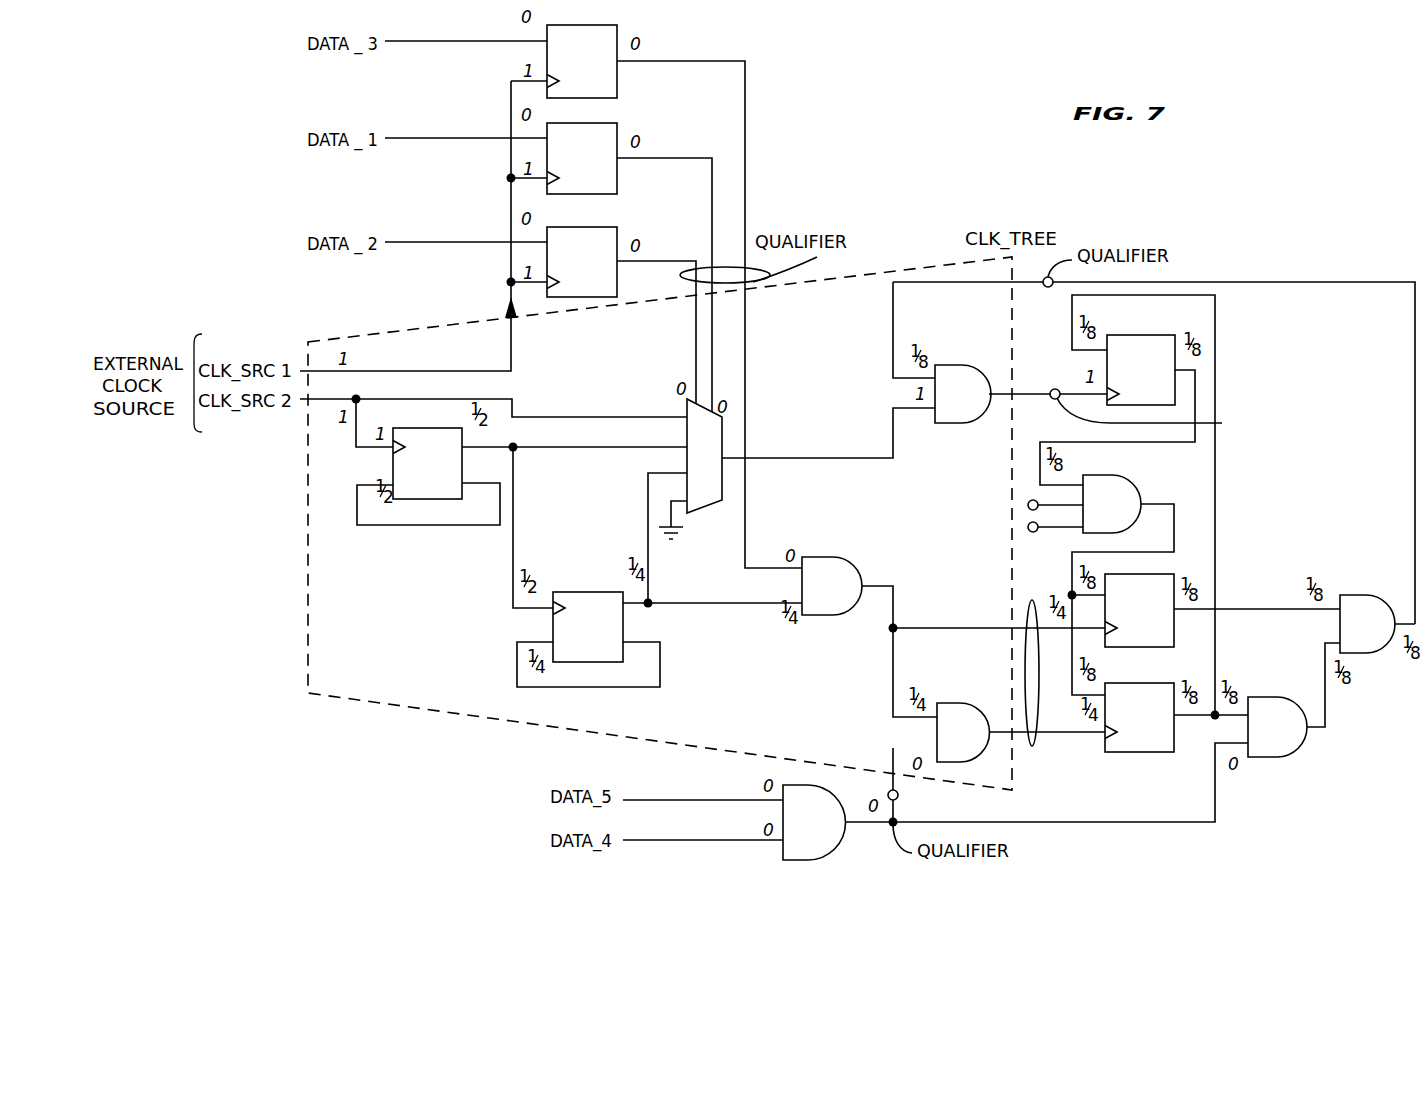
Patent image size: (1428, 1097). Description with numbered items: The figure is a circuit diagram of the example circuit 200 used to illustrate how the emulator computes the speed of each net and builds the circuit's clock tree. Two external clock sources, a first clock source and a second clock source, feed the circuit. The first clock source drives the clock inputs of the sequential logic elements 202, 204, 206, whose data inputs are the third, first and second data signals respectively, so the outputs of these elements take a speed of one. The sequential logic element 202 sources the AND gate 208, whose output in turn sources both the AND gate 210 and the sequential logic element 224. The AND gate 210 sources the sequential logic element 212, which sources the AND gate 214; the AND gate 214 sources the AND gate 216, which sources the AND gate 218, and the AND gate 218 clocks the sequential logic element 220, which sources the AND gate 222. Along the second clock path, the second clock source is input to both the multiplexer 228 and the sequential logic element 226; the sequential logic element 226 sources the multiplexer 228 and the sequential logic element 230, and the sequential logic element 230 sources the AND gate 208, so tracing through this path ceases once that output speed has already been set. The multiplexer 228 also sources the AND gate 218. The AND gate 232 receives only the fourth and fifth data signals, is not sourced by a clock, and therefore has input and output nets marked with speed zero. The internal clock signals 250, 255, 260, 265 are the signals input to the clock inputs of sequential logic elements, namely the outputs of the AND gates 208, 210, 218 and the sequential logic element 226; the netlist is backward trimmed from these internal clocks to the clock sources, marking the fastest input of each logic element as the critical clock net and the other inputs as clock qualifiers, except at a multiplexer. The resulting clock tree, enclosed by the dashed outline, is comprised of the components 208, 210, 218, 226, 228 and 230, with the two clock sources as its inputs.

The circuit 200 is at (1262, 810).
The sequential logic element 202 is at (617, 98).
The sequential logic element 204 is at (617, 194).
The sequential logic element 206 is at (617, 278).
The AND gate 208 is at (808, 557).
The AND gate 210 is at (943, 703).
The sequential logic element 212 is at (1122, 752).
The AND gate 214 is at (1260, 757).
The AND gate 216 is at (1362, 653).
The AND gate 218 is at (942, 365).
The sequential logic element 220 is at (1142, 335).
The AND gate 222 is at (1123, 480).
The sequential logic element 224 is at (1168, 574).
The sequential logic element 226 is at (393, 473).
The multiplexer 228 is at (693, 515).
The sequential logic element 230 is at (568, 592).
The AND gate 232 is at (805, 785).
The internal clock signal 250 is at (1030, 608).
The internal clock signal 255 is at (1033, 745).
The internal clock signal 260 is at (1189, 419).
The internal clock signal 265 is at (513, 540).